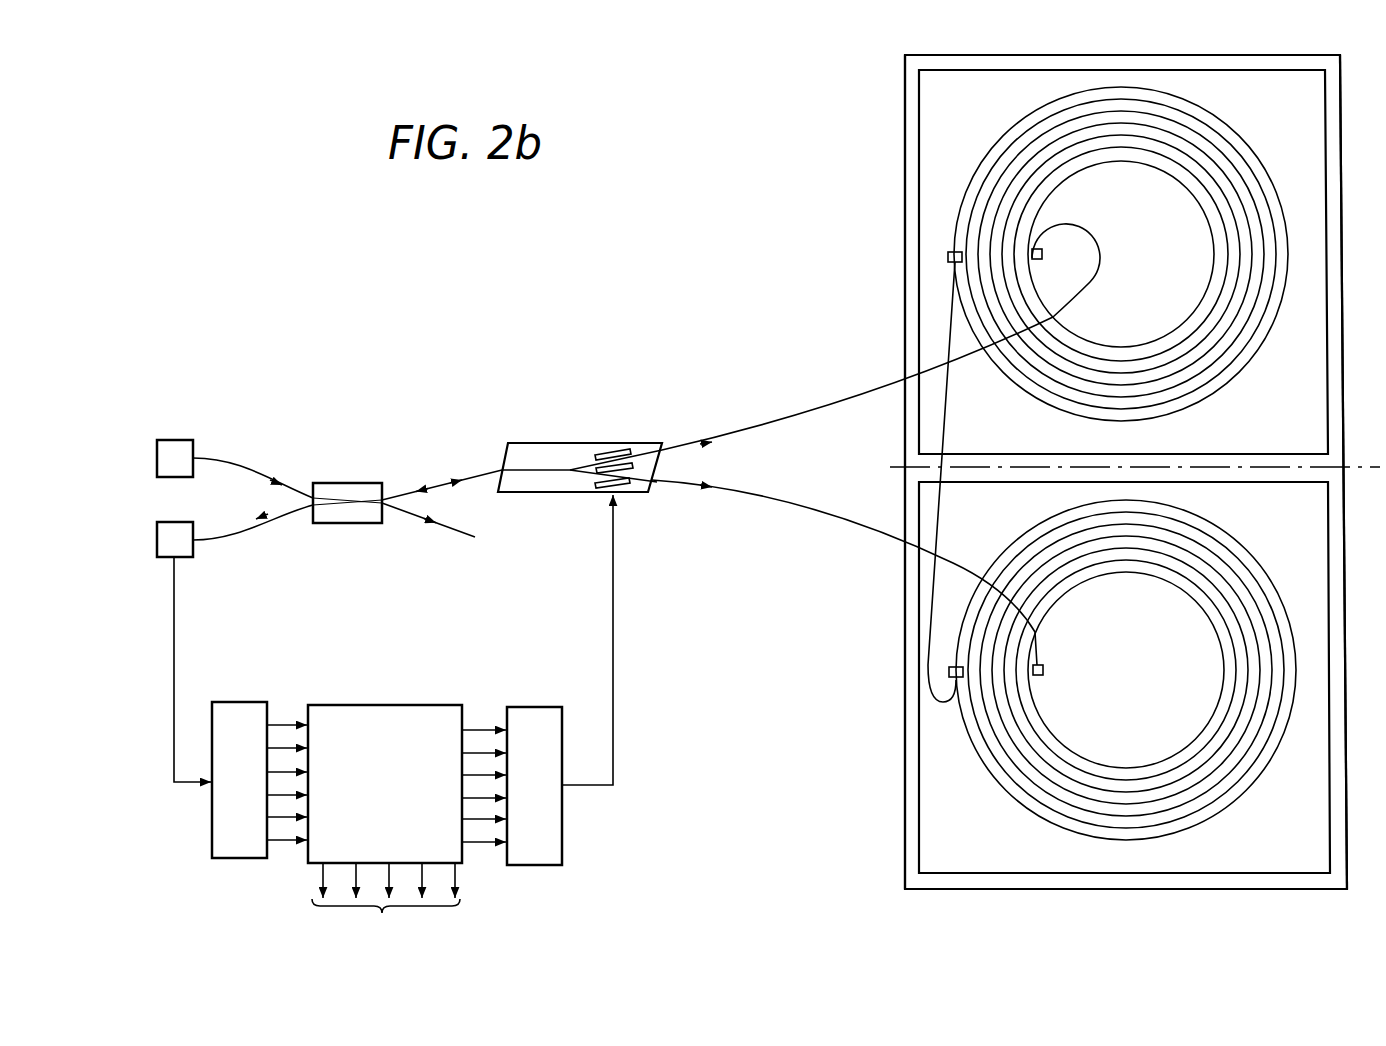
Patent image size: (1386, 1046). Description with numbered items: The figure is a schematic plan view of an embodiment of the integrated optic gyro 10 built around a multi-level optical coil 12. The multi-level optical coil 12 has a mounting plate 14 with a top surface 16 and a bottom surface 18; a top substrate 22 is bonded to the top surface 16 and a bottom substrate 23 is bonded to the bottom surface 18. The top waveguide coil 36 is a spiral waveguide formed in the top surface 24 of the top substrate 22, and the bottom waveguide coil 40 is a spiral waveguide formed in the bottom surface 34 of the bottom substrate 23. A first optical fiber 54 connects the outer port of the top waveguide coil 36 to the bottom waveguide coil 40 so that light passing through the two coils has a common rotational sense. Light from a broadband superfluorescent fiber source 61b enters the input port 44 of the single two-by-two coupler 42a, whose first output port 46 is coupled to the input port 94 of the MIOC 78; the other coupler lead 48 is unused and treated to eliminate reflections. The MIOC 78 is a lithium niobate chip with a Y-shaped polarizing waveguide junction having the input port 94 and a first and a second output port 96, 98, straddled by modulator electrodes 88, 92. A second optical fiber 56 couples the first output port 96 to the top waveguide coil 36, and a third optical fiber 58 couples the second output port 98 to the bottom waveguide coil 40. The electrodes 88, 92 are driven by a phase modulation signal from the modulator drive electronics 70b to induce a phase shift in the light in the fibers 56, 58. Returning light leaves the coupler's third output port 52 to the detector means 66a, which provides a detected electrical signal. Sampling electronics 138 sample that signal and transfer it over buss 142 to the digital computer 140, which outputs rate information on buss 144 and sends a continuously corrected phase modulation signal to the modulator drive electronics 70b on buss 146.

The integrated optic gyro 10 is at (433, 235).
The multi-level optical coil 12 is at (883, 155).
The mounting plate 14 is at (905, 739).
The top surface of mounting plate 16 is at (1337, 320).
The bottom surface of mounting plate 18 is at (1338, 752).
The top substrate 22 is at (1328, 370).
The bottom substrate 23 is at (1330, 845).
The top surface of top substrate 24 is at (1282, 439).
The bottom surface of bottom substrate 34 is at (1294, 834).
The top waveguide coil 36 is at (1213, 237).
The bottom waveguide coil 40 is at (1222, 673).
The single 2×2 coupler 42a is at (350, 483).
The input port of coupler 44 is at (287, 484).
The optical coupler first output port 46 is at (472, 468).
The unused coupler fiber 48 is at (433, 523).
The coupler third output port 52 is at (280, 514).
The first optical fiber 54 is at (941, 441).
The second optical fiber 56 is at (836, 401).
The third optical fiber 58 is at (838, 512).
The broadband superfluorescent fiber source 61b is at (185, 440).
The detector means 66a is at (180, 558).
The modulator drive electronics 70b is at (553, 708).
The MIOC (multifunction integrated optics chip) 78 is at (530, 494).
The modulator electrode 88 is at (627, 494).
The modulator electrode 92 is at (620, 450).
The input port of Y junction 94 is at (503, 468).
The first output port of Y junction 96 is at (665, 450).
The second output port of Y junction 98 is at (650, 483).
The sampling electronics 138 is at (225, 702).
The digital computer 140 is at (348, 781).
The buss 142 is at (283, 848).
The buss 144 is at (382, 913).
The buss 146 is at (487, 848).